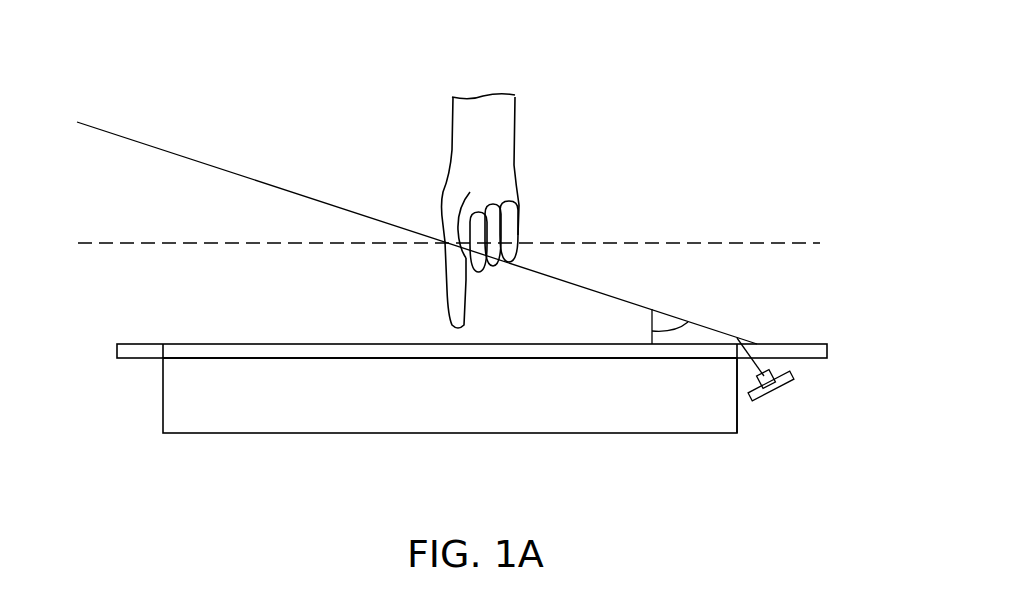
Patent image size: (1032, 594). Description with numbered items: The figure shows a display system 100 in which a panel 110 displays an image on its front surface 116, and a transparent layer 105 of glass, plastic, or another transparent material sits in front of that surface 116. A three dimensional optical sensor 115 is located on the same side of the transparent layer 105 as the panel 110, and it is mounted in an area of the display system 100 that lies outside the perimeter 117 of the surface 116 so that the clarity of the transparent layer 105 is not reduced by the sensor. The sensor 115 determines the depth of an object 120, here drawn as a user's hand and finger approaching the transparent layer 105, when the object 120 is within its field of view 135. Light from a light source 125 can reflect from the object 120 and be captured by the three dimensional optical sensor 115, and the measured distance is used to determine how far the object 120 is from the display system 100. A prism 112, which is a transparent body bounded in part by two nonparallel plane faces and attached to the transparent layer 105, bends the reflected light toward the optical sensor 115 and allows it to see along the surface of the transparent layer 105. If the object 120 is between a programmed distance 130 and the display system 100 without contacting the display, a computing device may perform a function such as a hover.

The display system 100 is at (778, 58).
The transparent layer 105 is at (798, 344).
The panel 110 is at (645, 435).
The prism 112 is at (743, 362).
The three dimensional optical sensor 115 is at (792, 376).
The surface 116 is at (355, 357).
The perimeter 117 is at (163, 357).
The object 120 is at (466, 308).
The light source 125 is at (776, 393).
The programmed distance 130 is at (782, 242).
The field of view 135 is at (689, 320).